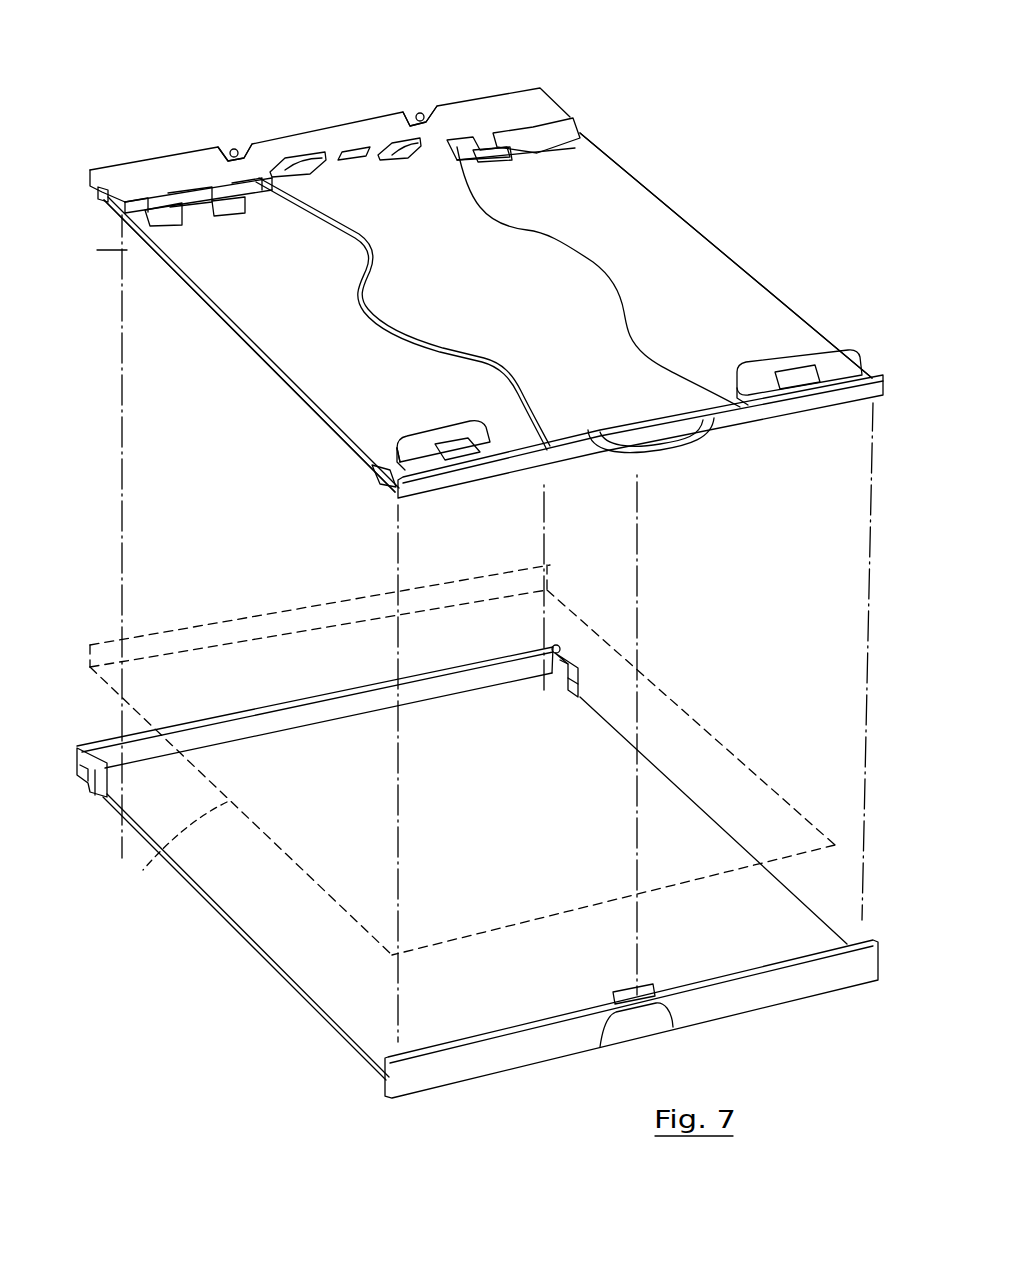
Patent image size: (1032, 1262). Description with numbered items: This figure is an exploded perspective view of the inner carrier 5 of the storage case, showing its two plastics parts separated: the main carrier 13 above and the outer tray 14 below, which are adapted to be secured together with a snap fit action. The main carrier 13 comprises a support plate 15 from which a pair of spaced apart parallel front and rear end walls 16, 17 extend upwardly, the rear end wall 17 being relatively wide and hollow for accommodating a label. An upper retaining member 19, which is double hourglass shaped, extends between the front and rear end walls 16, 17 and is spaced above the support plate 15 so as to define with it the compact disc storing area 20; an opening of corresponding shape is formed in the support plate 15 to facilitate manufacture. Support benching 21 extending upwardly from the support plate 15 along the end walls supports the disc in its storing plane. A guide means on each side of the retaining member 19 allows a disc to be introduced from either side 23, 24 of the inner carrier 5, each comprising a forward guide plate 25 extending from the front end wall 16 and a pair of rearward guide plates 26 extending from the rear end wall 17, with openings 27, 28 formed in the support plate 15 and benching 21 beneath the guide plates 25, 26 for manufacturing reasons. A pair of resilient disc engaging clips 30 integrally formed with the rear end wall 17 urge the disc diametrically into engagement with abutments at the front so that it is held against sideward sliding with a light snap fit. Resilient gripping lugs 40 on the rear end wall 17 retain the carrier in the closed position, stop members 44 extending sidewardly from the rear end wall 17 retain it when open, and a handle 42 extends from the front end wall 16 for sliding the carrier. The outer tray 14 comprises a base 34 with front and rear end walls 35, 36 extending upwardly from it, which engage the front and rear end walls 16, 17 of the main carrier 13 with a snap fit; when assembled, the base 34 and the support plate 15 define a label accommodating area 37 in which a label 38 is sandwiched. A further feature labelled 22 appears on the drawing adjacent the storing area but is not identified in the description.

The inner carrier 5 is at (704, 195).
The main carrier 13 is at (733, 290).
The outer tray 14 is at (273, 973).
The support plate 15 is at (685, 248).
The front end wall 16 is at (782, 410).
The rear end wall 17 is at (130, 196).
The upper retaining member 19 is at (518, 250).
The compact disc storing area 20 is at (417, 343).
The support benching 21 is at (190, 198).
The bead flange 22 is at (362, 305).
The side of inner carrier 23 is at (782, 308).
The side of inner carrier 24 is at (222, 324).
The forward guide plate 25 is at (420, 437).
The rearward guide plates 26 is at (135, 202).
The openings 27 is at (393, 450).
The openings 28 is at (577, 143).
The resilient disc engaging clips 30 is at (300, 167).
The base 34 is at (327, 997).
The front end wall 35 is at (473, 1063).
The rear end wall 36 is at (227, 727).
The label accommodating area 37 is at (220, 900).
The label 38 is at (177, 850).
The resilient gripping lugs 40 is at (233, 152).
The handle 42 is at (678, 448).
The stop members 44 is at (580, 688).